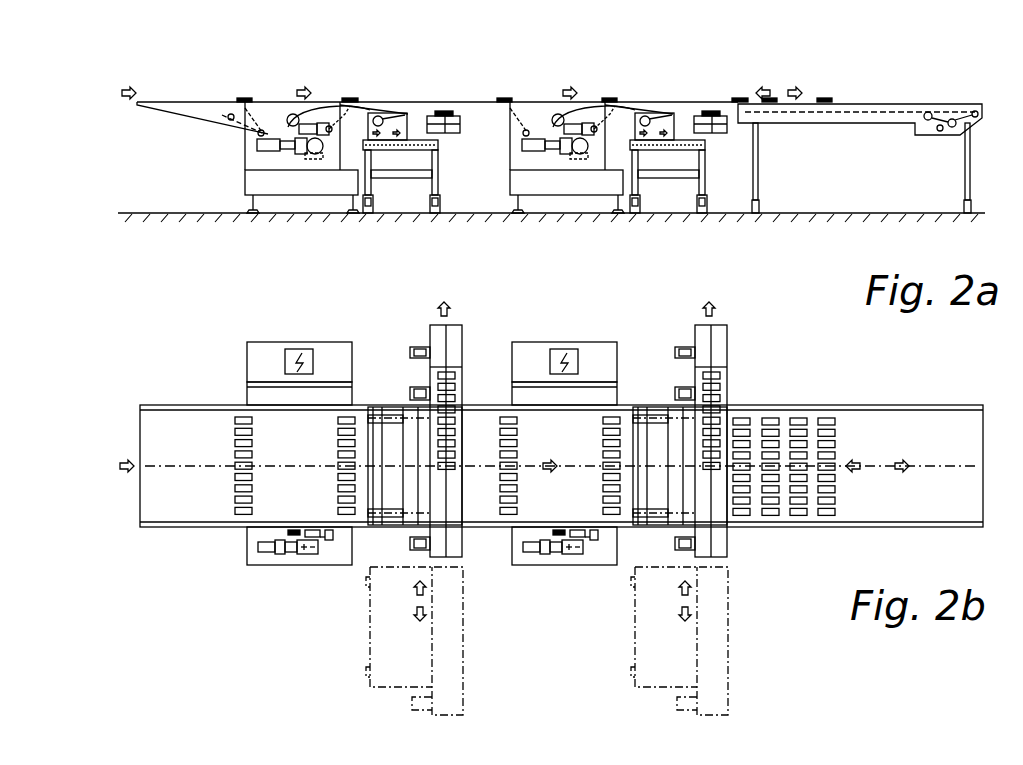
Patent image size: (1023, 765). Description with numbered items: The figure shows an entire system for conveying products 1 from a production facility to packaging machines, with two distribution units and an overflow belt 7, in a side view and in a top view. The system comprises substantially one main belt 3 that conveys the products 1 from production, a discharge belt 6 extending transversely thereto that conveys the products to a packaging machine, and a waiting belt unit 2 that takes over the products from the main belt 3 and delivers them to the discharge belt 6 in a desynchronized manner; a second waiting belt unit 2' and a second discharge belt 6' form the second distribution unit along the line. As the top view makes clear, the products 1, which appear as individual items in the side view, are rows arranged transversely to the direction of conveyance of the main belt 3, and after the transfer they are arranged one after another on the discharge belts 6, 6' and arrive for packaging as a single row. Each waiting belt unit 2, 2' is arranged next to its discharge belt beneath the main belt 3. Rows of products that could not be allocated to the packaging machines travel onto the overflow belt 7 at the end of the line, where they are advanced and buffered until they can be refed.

In FIG. 2A, the products 1 is at (245, 100).
In FIG. 2B, the products 1 is at (243, 420).
In FIG. 2A, the waiting belt unit 2 is at (456, 202).
In FIG. 2A, the second waiting belt unit 2' is at (727, 201).
In FIG. 2A, the main belt 3 is at (178, 102).
In FIG. 2B, the main belt 3 is at (193, 425).
In FIG. 2B, the discharge belt 6 is at (438, 508).
In FIG. 2B, the second discharge belt 6' is at (705, 508).
In FIG. 2A, the overflow belt 7 is at (852, 104).
In FIG. 2B, the overflow belt 7 is at (810, 412).